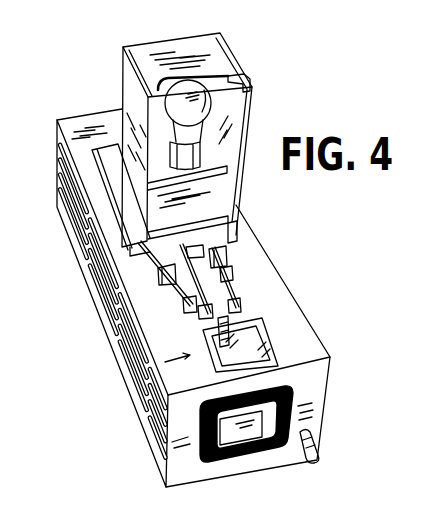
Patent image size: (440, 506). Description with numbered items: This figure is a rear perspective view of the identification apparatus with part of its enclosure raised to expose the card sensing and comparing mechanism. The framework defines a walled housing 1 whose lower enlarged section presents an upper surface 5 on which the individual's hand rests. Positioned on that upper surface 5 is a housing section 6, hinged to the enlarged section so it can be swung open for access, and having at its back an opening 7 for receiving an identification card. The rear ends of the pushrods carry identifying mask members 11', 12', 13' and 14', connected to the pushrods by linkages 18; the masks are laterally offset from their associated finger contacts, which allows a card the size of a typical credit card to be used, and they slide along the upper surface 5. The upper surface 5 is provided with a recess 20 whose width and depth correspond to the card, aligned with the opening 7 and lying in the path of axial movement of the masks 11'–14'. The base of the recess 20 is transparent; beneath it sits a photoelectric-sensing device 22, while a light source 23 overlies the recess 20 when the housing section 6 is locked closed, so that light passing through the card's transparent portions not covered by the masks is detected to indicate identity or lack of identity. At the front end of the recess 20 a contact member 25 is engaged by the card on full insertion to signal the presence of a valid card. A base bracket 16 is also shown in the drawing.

The walled housing 1 is at (103, 99).
The upper surface 5 is at (85, 128).
The housing section 6 is at (177, 56).
The opening 7 is at (237, 77).
The light source 23 is at (203, 107).
The base bracket 16 is at (233, 229).
The linkages 18 is at (160, 280).
The mask member 14' is at (167, 279).
The mask member 13' is at (186, 294).
The mask member 12' is at (233, 256).
The mask member 11' is at (241, 278).
The recess 20 is at (258, 340).
The contact member 25 is at (229, 313).
The photoelectric-sensing device 22 is at (247, 363).